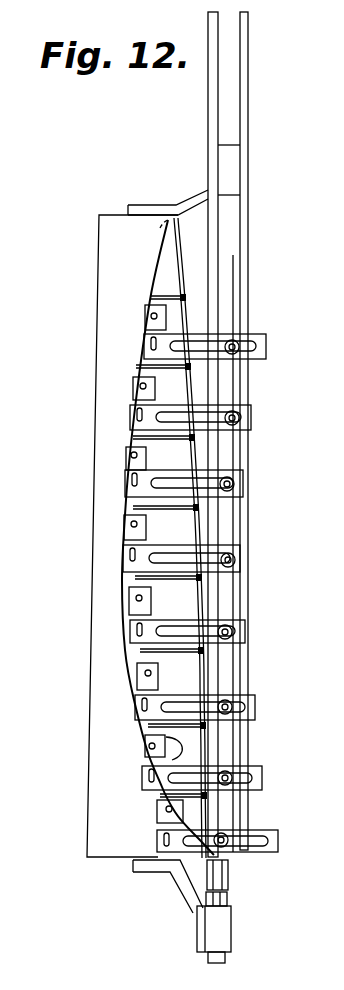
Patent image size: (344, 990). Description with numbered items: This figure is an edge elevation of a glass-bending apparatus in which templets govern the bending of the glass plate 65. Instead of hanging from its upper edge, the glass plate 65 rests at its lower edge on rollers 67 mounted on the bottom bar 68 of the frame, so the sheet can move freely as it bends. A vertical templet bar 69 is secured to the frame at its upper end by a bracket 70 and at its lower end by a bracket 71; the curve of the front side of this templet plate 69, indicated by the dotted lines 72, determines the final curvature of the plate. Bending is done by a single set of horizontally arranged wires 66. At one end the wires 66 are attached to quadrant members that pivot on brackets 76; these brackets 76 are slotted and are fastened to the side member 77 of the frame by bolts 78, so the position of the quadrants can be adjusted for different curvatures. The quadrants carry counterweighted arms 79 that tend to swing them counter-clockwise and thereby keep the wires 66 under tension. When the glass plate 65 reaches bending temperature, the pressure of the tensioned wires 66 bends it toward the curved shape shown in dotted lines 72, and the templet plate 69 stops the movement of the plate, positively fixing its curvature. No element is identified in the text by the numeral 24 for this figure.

The guide post rail 24 is at (250, 130).
The side member 77 is at (243, 222).
The templet bar 69 is at (97, 596).
The bracket 70 is at (182, 204).
The bracket 71 is at (181, 884).
The dotted lines 72 is at (160, 252).
The bracket 76 is at (123, 646).
The glass plate 65 is at (176, 272).
The wires 66 is at (163, 300).
The counterweighted arm 79 is at (128, 407).
The bolt 78 is at (238, 561).
The roller 67 is at (220, 866).
The bottom bar 68 is at (215, 935).